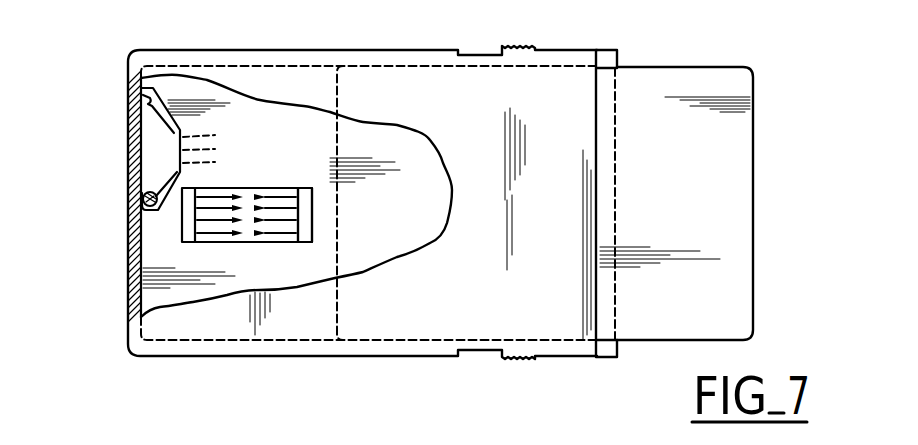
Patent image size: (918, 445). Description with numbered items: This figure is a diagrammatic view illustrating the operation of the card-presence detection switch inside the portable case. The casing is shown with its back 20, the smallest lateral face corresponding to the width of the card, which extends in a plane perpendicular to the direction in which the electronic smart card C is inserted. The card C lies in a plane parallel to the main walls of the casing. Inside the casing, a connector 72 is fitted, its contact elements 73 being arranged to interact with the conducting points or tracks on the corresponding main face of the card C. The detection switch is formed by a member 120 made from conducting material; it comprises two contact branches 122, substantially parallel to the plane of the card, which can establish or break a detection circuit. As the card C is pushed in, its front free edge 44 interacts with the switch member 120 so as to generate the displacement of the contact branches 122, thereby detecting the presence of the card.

The back 20 is at (128, 273).
The front free edge 44 is at (337, 257).
The connector 72 is at (237, 190).
The contact elements 73 is at (287, 194).
The member 120 is at (160, 141).
The contact branches 122 is at (206, 133).
The electronic smart card C is at (670, 67).